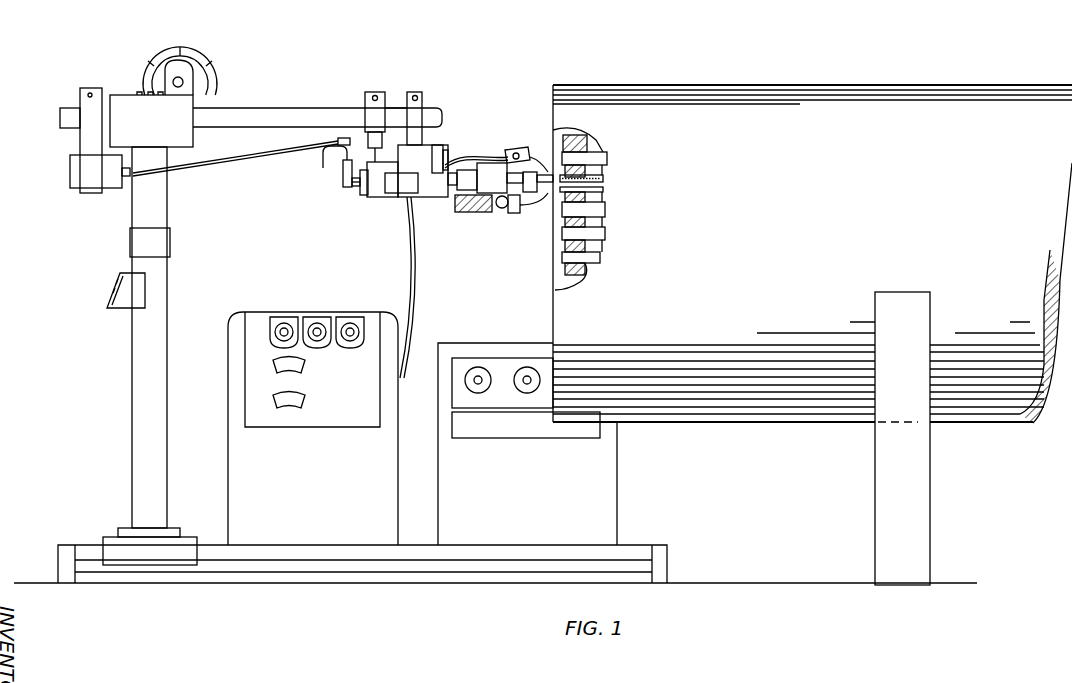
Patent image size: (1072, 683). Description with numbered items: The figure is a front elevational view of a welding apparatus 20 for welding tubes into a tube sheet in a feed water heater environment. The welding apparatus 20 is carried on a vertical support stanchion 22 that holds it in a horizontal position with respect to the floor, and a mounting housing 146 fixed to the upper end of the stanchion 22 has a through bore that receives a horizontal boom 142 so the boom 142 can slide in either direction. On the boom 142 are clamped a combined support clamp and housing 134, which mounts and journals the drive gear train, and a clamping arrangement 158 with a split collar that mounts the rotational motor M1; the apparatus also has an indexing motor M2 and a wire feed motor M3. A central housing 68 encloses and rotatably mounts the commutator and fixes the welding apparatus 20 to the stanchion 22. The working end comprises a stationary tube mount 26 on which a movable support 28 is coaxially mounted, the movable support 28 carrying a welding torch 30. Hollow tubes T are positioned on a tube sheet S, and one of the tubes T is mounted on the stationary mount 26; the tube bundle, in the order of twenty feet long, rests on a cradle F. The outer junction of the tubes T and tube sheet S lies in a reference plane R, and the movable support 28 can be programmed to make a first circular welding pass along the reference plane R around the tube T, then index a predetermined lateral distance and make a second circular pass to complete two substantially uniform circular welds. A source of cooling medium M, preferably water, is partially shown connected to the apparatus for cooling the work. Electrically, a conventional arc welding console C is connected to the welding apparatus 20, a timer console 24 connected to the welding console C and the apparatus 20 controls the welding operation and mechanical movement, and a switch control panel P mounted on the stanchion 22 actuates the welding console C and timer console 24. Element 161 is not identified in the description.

The welding apparatus 20 is at (276, 92).
The vertical support stanchion 22 is at (140, 333).
The timer console 24 is at (306, 306).
The stationary tube mount 26 is at (540, 200).
The movable support 28 is at (453, 188).
The welding torch 30 is at (526, 146).
The central housing 68 is at (421, 151).
The combined support clamp and housing 134 is at (362, 103).
The horizontal boom 142 is at (240, 112).
The mounting housing 146 is at (123, 96).
The clamping arrangement 158 is at (391, 90).
The plate 161 is at (426, 93).
The source of cooling medium M is at (322, 163).
The rotational motor M1 is at (72, 165).
The indexing motor M2 is at (407, 183).
The wire feed motor M3 is at (500, 208).
The switch control panel P is at (100, 288).
The reference plane R is at (559, 144).
The tube sheet S is at (580, 140).
The hollow tubes T is at (600, 171).
The arc welding console C is at (456, 338).
The cradle F is at (866, 465).